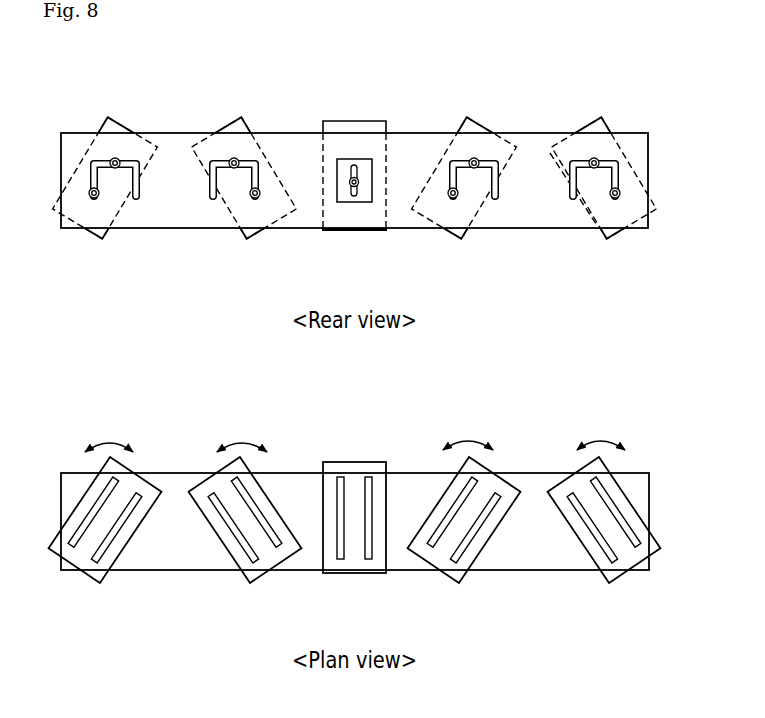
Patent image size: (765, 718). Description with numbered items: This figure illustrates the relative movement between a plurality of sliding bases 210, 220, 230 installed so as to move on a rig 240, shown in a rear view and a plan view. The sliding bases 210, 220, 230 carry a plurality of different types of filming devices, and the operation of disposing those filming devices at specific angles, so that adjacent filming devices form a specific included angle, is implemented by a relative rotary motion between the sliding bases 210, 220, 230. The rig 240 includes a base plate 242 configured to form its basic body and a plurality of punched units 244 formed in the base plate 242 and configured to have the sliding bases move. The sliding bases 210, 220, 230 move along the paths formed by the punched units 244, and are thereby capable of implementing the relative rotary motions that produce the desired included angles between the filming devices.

The sliding base 210 is at (355, 125).
The sliding base 220 is at (470, 125).
The sliding base 230 is at (240, 127).
The rig 240 is at (550, 130).
The base plate 242 is at (583, 218).
The punched unit 244 is at (140, 198).